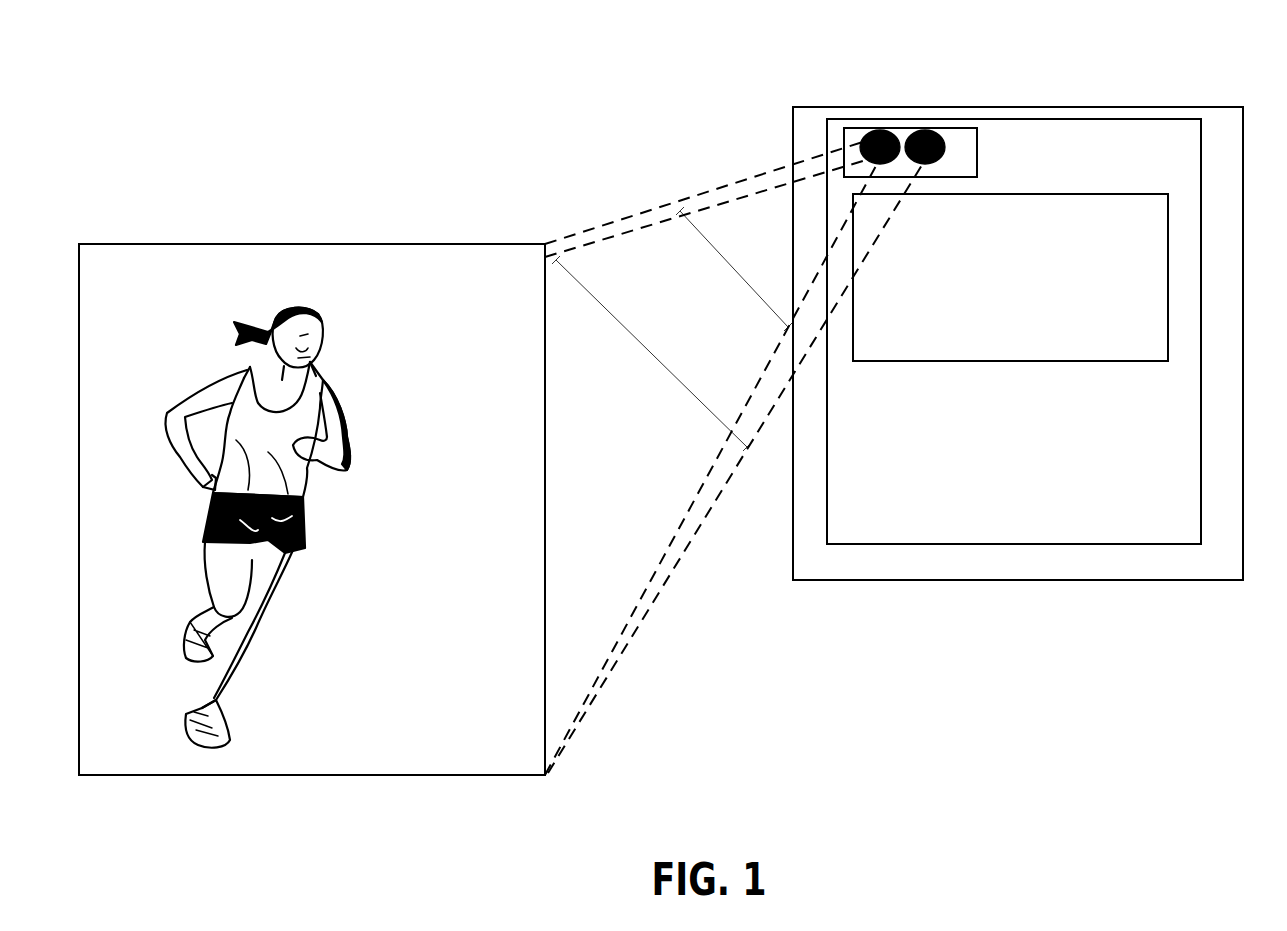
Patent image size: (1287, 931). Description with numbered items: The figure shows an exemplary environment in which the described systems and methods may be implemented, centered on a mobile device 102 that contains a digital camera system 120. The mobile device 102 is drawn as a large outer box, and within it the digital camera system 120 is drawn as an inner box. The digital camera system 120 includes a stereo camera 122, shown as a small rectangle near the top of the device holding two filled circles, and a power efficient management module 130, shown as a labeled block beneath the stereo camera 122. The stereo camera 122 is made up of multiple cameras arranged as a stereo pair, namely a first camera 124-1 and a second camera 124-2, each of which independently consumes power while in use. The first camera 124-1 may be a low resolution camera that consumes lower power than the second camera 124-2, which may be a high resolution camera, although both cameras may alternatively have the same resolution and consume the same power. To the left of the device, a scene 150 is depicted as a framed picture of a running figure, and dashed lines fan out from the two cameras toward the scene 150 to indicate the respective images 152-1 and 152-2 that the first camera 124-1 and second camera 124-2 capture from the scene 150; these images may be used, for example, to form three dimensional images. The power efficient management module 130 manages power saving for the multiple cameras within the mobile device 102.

The mobile device 102 is at (940, 580).
The digital camera system 120 is at (1014, 331).
The stereo camera 122 is at (950, 127).
The first camera 124-1 is at (862, 140).
The second camera 124-2 is at (945, 147).
The power efficient management module 130 is at (1010, 277).
The scene 150 is at (318, 243).
The image captured by first camera 152-1 is at (695, 231).
The image captured by second camera 152-2 is at (603, 301).